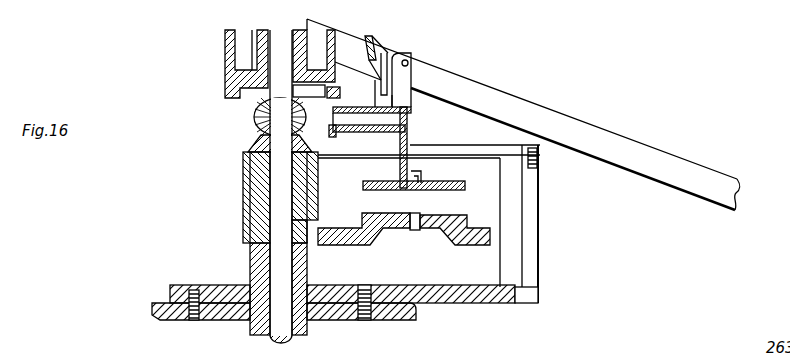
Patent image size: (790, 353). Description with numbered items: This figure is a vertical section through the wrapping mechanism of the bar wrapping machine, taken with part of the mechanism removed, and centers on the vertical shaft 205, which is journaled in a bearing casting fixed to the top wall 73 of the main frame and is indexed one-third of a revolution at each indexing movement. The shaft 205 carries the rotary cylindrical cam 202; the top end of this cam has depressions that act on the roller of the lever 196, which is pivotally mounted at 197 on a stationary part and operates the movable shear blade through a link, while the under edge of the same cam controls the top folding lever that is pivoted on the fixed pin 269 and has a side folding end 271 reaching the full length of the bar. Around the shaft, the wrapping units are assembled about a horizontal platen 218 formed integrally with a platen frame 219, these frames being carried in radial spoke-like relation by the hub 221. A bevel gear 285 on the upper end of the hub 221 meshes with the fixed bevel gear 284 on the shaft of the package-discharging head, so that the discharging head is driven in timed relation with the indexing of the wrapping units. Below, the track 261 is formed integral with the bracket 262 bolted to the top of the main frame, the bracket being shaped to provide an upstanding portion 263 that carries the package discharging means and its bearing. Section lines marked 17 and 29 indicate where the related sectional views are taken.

The rotary cylindrical cam 202 is at (233, 54).
The lever 196 is at (373, 44).
The pivot 197 is at (414, 61).
The section line 29 is at (418, 38).
The fixed pin 269 is at (402, 121).
The bevel gear 284 is at (256, 119).
The bevel gear 285 is at (254, 147).
The hub 221 is at (256, 201).
The vertical shaft 205 is at (272, 162).
The platen 218 is at (447, 215).
The platen frame 219 is at (363, 244).
The side folding end 271 is at (458, 178).
The upstanding portion 263 is at (518, 175).
The track 261 is at (430, 288).
The bracket 262 is at (488, 304).
The top wall 73 is at (178, 322).
The section line 17 is at (158, 285).